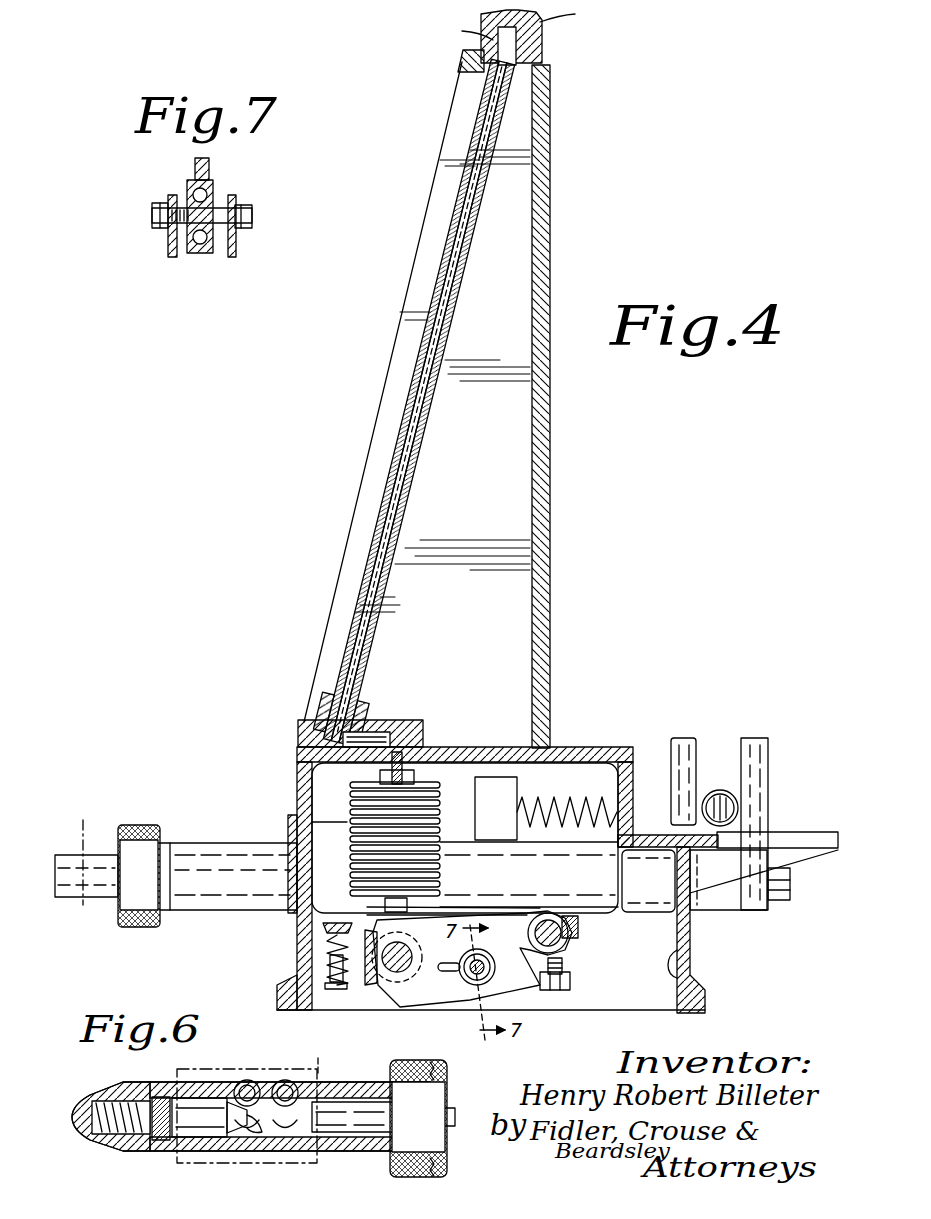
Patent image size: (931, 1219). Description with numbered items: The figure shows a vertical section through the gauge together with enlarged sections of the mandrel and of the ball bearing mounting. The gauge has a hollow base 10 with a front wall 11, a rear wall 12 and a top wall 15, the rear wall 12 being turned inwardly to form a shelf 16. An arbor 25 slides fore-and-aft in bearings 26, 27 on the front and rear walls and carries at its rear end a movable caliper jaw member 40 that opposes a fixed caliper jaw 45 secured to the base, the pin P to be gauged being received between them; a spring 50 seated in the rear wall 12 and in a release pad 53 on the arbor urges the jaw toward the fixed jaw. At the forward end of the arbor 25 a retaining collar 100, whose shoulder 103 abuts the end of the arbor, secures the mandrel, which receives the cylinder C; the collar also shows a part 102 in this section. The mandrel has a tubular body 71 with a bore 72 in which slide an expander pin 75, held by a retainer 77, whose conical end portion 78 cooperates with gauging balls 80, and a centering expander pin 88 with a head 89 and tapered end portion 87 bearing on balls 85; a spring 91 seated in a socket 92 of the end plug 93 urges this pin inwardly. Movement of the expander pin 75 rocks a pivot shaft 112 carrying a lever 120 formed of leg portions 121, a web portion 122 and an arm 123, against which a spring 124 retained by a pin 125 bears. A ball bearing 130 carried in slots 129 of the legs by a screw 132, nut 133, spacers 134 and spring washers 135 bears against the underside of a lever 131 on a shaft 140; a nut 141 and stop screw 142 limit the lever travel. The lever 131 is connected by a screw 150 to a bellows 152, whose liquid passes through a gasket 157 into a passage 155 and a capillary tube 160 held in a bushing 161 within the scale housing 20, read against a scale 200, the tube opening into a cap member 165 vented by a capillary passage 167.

In FIG. 4, the scale housing 20 is at (575, 522).
In FIG. 4, the capillary passage 167 is at (576, 11).
In FIG. 4, the cap member 165 is at (455, 29).
In FIG. 4, the scale 200 is at (397, 518).
In FIG. 4, the capillary tube 160 is at (372, 622).
In FIG. 4, the bushing 161 is at (328, 705).
In FIG. 4, the passage 155 is at (368, 730).
In FIG. 4, the gasket 157 is at (460, 748).
In FIG. 4, the front wall 11 is at (297, 780).
In FIG. 4, the top wall 15 is at (585, 745).
In FIG. 4, the bearing 26 is at (330, 822).
In FIG. 4, the rear wall 12 is at (690, 945).
In FIG. 4, the bearing 27 is at (680, 963).
In FIG. 4, the arbor 25 is at (195, 913).
In FIG. 4, the retaining collar 100 is at (135, 927).
In FIG. 6, the retaining collar 100 is at (395, 1160).
In FIG. 4, the tubular body 71 is at (95, 905).
In FIG. 6, the tubular body 71 is at (326, 1098).
In FIG. 4, the cylinder C is at (77, 851).
In FIG. 6, the cylinder C is at (252, 1099).
In FIG. 4, the bellows 152 is at (350, 878).
In FIG. 4, the release pad 53 is at (508, 819).
In FIG. 4, the spring 50 is at (545, 800).
In FIG. 4, the screw 150 is at (405, 900).
In FIG. 4, the pivot shaft 112 is at (410, 940).
In FIG. 4, the ball bearing 130 is at (490, 930).
In FIG. 7, the ball bearing 130 is at (217, 190).
In FIG. 4, the lever 131 is at (480, 913).
In FIG. 7, the lever 131 is at (195, 168).
In FIG. 4, the screw 132 is at (490, 977).
In FIG. 7, the screw 132 is at (252, 215).
In FIG. 4, the slots 129 is at (433, 982).
In FIG. 4, the shaft 140 is at (572, 940).
In FIG. 4, the stop screw 142 is at (563, 965).
In FIG. 4, the nut 141 is at (571, 981).
In FIG. 4, the lever 120 is at (412, 1005).
In FIG. 4, the leg portions 121 is at (470, 1000).
In FIG. 7, the leg portions 121 is at (236, 250).
In FIG. 4, the web portion 122 is at (323, 930).
In FIG. 4, the spring 124 is at (335, 950).
In FIG. 4, the pin 125 is at (330, 970).
In FIG. 4, the arm 123 is at (325, 988).
In FIG. 4, the fixed caliper jaw 45 is at (698, 740).
In FIG. 4, the pin P is at (718, 791).
In FIG. 4, the caliper jaw member 40 is at (767, 756).
In FIG. 4, the shelf 16 is at (790, 880).
In FIG. 6, the base 10 is at (133, 1073).
In FIG. 6, the socket 92 is at (97, 1103).
In FIG. 6, the end plug 93 is at (86, 1136).
In FIG. 6, the spring 91 is at (112, 1143).
In FIG. 6, the head 89 is at (165, 1097).
In FIG. 6, the centering expander pin 88 is at (196, 1098).
In FIG. 6, the balls 85 is at (250, 1081).
In FIG. 6, the gauging balls 80 is at (287, 1081).
In FIG. 6, the expander pin 75 is at (356, 1110).
In FIG. 6, the retainer 77 is at (446, 1102).
In FIG. 6, the bore 102 is at (410, 1150).
In FIG. 6, the shoulder 103 is at (430, 1162).
In FIG. 6, the conical end portion 78 is at (298, 1152).
In FIG. 6, the tapered end portion 87 is at (236, 1140).
In FIG. 6, the bore 72 is at (272, 1140).
In FIG. 7, the spring washers 135 is at (168, 205).
In FIG. 7, the nut 133 is at (165, 230).
In FIG. 7, the spacers 134 is at (215, 246).